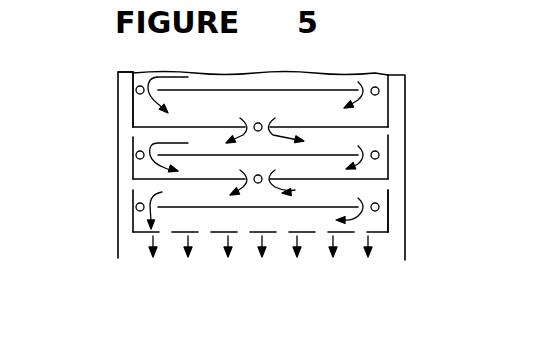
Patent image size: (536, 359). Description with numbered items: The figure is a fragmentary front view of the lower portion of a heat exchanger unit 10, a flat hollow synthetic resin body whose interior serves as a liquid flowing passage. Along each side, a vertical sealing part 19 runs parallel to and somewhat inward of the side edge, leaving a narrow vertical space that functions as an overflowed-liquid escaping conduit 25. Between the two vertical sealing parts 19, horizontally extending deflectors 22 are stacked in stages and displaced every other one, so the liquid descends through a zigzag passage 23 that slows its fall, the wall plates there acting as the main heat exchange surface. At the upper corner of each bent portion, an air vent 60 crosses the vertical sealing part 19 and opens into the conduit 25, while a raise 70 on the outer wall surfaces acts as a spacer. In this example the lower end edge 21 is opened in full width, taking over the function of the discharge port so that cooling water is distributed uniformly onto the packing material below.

The heat exchanger unit 10 is at (108, 187).
The vertical sealing part 19 is at (132, 104).
The lower end edge 21 is at (407, 278).
The deflector 22 is at (322, 127).
The zigzag passage 23 is at (373, 112).
The overflowed-liquid escaping conduit 25 is at (124, 153).
The air vent 60 is at (131, 132).
The raise 70 is at (136, 207).